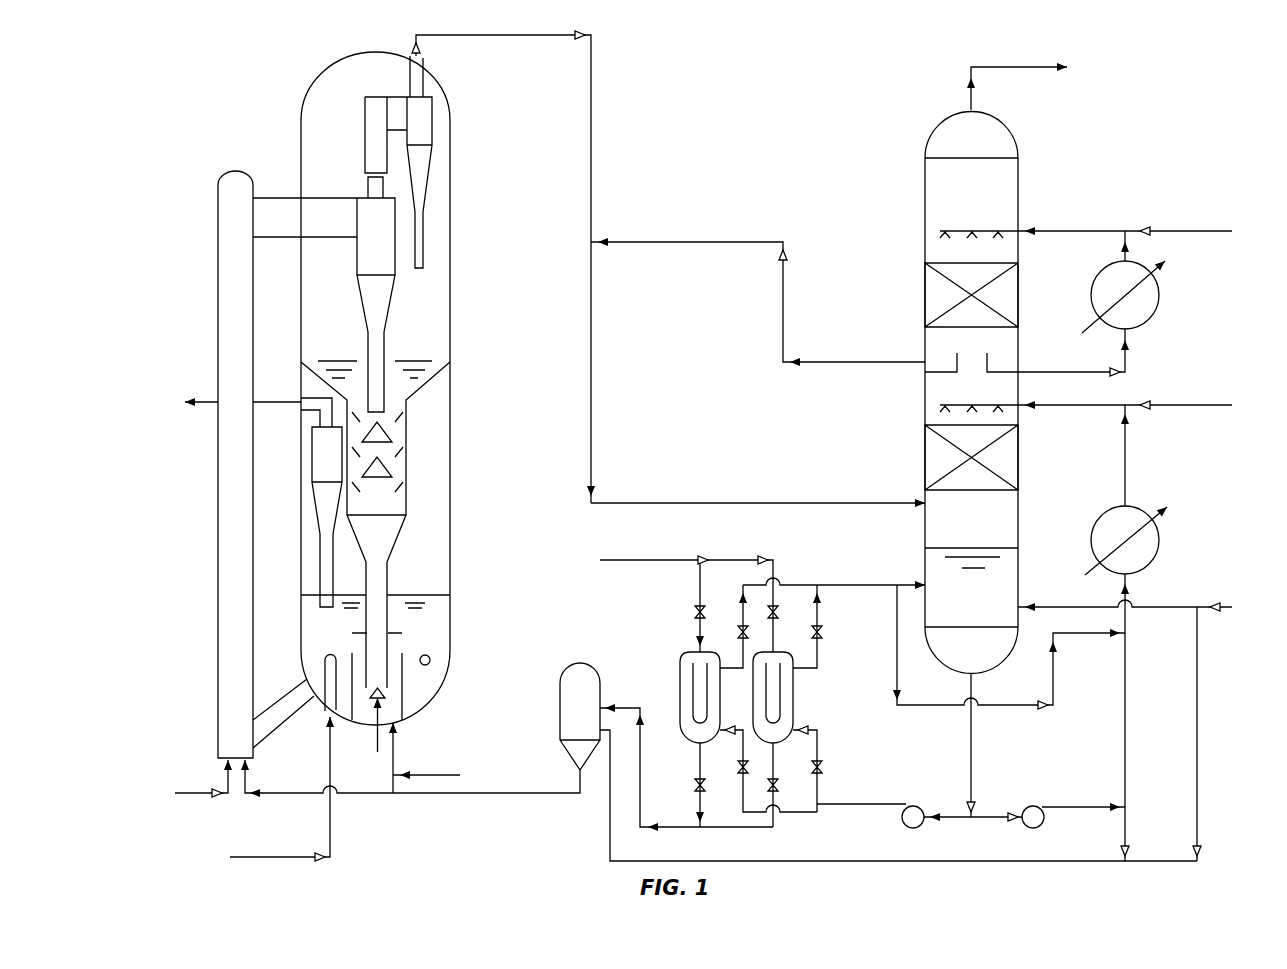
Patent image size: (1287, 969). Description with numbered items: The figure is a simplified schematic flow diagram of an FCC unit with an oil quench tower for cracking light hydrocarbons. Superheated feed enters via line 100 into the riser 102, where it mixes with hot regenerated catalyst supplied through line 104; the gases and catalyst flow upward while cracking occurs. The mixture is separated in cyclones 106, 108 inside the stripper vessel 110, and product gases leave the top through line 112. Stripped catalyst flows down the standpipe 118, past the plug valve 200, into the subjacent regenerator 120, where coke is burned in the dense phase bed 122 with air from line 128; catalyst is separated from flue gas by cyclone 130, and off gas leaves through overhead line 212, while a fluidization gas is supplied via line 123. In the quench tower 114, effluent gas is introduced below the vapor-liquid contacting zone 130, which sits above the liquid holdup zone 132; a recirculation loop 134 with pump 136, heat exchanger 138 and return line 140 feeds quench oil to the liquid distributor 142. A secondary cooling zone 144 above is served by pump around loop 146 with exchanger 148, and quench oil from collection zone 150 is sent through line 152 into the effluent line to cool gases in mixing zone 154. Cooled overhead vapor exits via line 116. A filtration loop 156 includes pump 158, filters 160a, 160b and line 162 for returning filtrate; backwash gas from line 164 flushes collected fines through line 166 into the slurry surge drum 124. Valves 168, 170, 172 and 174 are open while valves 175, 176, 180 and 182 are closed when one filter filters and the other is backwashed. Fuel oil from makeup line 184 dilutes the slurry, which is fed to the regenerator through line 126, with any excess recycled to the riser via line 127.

The feed line 100 is at (208, 790).
The riser 102 is at (218, 587).
The regenerated catalyst line 104 is at (296, 720).
The cyclone 106 is at (377, 298).
The cyclone 108 is at (418, 120).
The stripper vessel 110 is at (448, 175).
The effluent gas line 112 is at (510, 40).
The quench tower 114 is at (940, 122).
The overhead vapor line 116 is at (1003, 67).
The standpipe 118 is at (380, 595).
The regenerator 120 is at (452, 650).
The dense phase bed 122 is at (412, 622).
The fluidization gas line 123 is at (425, 774).
The slurry surge drum 124 is at (582, 663).
The slurry line 126 is at (482, 793).
The slurry recycle line 127 is at (365, 793).
The air line 128 is at (282, 850).
The cyclone / vapor-liquid contacting zone 130 is at (328, 453).
The liquid holdup zone 132 is at (985, 592).
The recirculation loop 134 is at (1127, 718).
The pump 136 is at (1040, 826).
The heat exchanger 138 is at (1150, 505).
The return line 140 is at (1130, 468).
The liquid distributor 142 is at (997, 405).
The secondary cooling zone 144 is at (1008, 295).
The pump around loop 146 is at (1050, 231).
The exchanger 148 is at (1148, 322).
The collection zone 150 is at (935, 348).
The quench oil line 152 is at (675, 242).
The mixing zone 154 is at (597, 392).
The filtration loop 156 is at (882, 804).
The pump 158 is at (920, 826).
The filter 160a is at (679, 695).
The filter 160b is at (793, 700).
The filtrate return line 162 is at (862, 585).
The backwash gas line 164 is at (615, 560).
The backwash line 166 is at (745, 827).
The valve 168 is at (830, 770).
The valve 170 is at (817, 630).
The valve 172 is at (700, 618).
The valve 174 is at (700, 775).
The valve 175 is at (778, 602).
The valve 176 is at (773, 790).
The valve 180 is at (740, 630).
The valve 182 is at (742, 772).
The makeup line 184 is at (1155, 607).
The plug valve 200 is at (393, 690).
The overhead line 212 is at (208, 398).